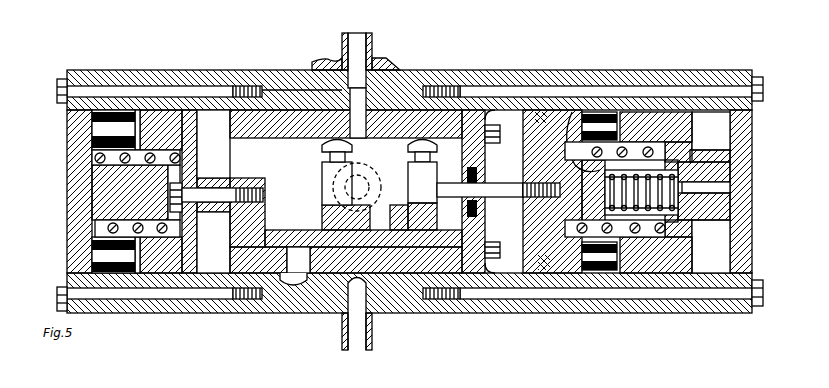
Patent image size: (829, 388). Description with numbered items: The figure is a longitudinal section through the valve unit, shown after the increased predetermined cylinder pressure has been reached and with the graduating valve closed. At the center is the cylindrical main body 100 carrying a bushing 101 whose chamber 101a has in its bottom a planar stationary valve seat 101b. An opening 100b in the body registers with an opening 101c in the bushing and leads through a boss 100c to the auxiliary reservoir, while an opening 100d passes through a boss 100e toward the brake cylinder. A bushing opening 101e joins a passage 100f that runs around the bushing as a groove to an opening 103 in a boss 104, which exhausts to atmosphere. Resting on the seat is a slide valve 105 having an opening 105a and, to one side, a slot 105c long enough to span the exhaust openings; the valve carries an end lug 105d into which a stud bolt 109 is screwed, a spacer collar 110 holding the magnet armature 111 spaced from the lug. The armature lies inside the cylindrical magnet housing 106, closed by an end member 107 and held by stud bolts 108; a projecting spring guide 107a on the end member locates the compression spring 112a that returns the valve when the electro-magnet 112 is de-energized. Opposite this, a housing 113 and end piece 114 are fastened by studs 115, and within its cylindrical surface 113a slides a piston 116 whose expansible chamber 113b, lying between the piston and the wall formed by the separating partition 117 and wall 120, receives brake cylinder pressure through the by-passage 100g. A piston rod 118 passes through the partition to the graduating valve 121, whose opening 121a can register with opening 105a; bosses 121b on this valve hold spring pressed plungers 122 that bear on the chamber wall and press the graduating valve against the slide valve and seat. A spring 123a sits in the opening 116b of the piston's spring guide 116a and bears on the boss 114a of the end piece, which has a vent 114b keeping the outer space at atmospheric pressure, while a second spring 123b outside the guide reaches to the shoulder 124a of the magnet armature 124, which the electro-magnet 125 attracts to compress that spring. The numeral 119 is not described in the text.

The main body 100 is at (240, 128).
The opening 100b is at (356, 45).
The boss 100c is at (340, 62).
The opening 100d is at (358, 340).
The boss 100e is at (343, 283).
The passage 100f is at (292, 285).
The by-passage 100g is at (477, 277).
The bushing 101 is at (257, 128).
The chamber 101a is at (261, 92).
The stationary valve seat 101b is at (345, 205).
The opening 101c is at (352, 122).
The opening 101e is at (310, 229).
The opening 103 is at (338, 186).
The boss 104 is at (312, 100).
The slide valve 105 is at (326, 193).
The opening 105a is at (376, 322).
The slot 105c is at (302, 282).
The end lug 105d is at (250, 187).
The magnet housing 106 is at (137, 69).
The end member 107 is at (76, 113).
The spring guide 107a is at (113, 187).
The stud bolts 108 is at (57, 90).
The stud bolt 109 is at (220, 128).
The spacer collar 110 is at (203, 135).
The magnet armature 111 is at (148, 128).
The electro-magnet 112 is at (96, 142).
The compression spring 112a is at (112, 226).
The housing 113 is at (537, 78).
The cylindrical surface 113a is at (484, 125).
The expansible chamber 113b is at (514, 262).
The end piece 114 is at (741, 138).
The boss 114a is at (700, 176).
The vent 114b is at (726, 188).
The studs 115 is at (758, 90).
The piston 116 is at (562, 135).
The spring guide 116a is at (553, 112).
The opening 116b is at (577, 175).
The separating partition 117 is at (455, 100).
The piston rod 118 is at (441, 190).
The rod 119 is at (476, 128).
The wall 120 is at (487, 287).
The graduating valve 121 is at (433, 290).
The opening 121a is at (381, 283).
The bosses 121b is at (413, 283).
The spring pressed plungers 122 is at (405, 128).
The spring 123a is at (640, 170).
The second spring 123b is at (664, 170).
The magnet armature 124 is at (668, 120).
The shoulder 124a is at (675, 153).
The electro-magnet 125 is at (594, 125).